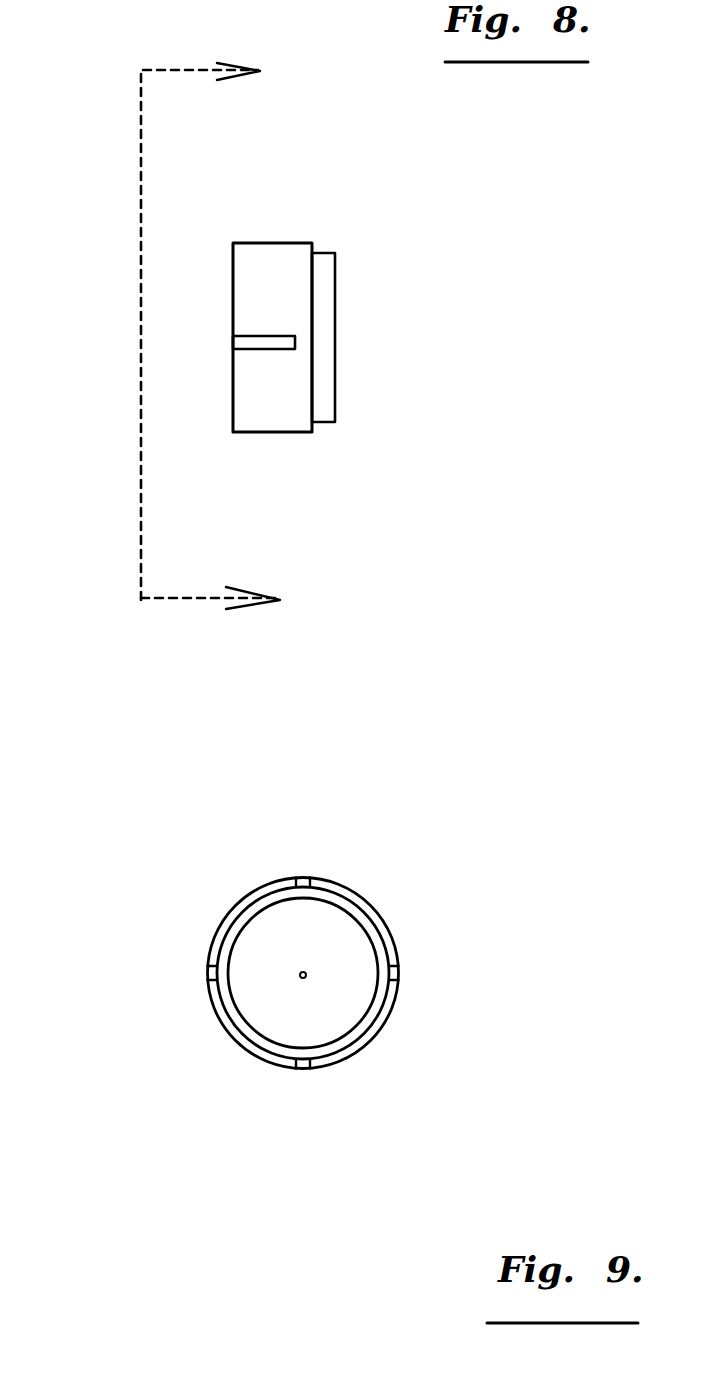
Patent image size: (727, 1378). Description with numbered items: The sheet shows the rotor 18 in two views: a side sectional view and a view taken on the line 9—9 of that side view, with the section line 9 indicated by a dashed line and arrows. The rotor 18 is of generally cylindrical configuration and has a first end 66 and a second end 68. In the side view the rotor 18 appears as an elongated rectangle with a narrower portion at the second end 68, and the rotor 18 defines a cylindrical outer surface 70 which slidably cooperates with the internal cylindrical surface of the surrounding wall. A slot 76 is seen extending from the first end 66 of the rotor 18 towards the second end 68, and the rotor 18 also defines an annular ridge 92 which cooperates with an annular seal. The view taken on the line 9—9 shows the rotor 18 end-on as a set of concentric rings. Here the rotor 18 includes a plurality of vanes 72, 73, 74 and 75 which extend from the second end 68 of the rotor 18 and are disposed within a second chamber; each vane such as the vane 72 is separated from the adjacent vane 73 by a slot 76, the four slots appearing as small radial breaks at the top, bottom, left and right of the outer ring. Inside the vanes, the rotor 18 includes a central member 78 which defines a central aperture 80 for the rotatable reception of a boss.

In FIG. 8, the section line 9— 9 is at (233, 341).
In FIG. 8, the rotor 18 is at (243, 182).
In FIG. 9, the rotor 18 is at (316, 1082).
In FIG. 8, the first end 66 is at (233, 380).
In FIG. 8, the second end 68 is at (337, 300).
In FIG. 8, the cylindrical outer surface 70 is at (292, 432).
In FIG. 9, the vane 72 is at (373, 917).
In FIG. 8, the vane 73 is at (252, 280).
In FIG. 9, the vane 73 is at (365, 1032).
In FIG. 8, the vane 74 is at (273, 393).
In FIG. 9, the vane 74 is at (243, 1043).
In FIG. 9, the vane 75 is at (232, 918).
In FIG. 8, the slot 76 is at (257, 337).
In FIG. 9, the slot 76 is at (397, 977).
In FIG. 9, the central member 78 is at (253, 992).
In FIG. 9, the central aperture 80 is at (303, 975).
In FIG. 8, the annular ridge 92 is at (318, 423).